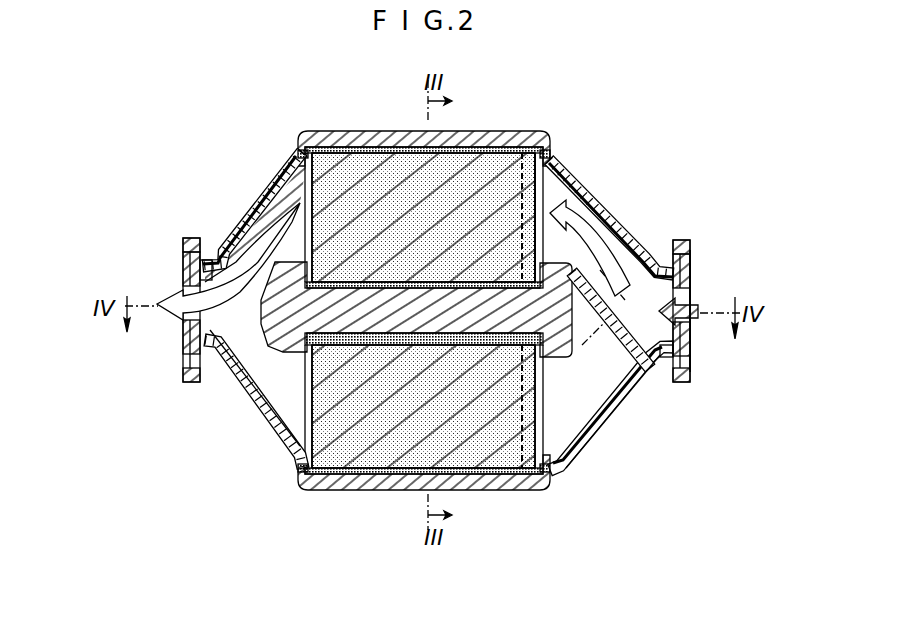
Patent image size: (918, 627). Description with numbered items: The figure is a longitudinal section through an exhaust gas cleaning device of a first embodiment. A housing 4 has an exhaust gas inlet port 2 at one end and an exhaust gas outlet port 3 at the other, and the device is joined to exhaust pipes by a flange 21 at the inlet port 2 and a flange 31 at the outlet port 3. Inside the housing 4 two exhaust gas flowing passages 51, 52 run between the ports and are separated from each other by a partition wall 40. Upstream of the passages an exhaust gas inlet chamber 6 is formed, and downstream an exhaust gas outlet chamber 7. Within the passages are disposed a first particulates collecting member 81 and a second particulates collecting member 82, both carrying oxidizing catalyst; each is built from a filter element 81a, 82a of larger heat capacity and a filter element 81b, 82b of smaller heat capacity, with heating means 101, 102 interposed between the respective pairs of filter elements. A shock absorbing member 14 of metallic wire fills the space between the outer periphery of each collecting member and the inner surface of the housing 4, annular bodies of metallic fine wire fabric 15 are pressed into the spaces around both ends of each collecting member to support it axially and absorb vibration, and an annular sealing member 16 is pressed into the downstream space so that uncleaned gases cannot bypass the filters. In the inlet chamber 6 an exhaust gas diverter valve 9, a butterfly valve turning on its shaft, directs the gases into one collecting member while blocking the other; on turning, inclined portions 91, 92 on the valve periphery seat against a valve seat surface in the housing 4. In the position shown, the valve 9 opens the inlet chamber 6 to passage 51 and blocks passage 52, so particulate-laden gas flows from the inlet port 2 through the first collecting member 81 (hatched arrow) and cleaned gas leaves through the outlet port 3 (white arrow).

The exhaust gas inlet port 2 is at (688, 290).
The exhaust gas outlet port 3 is at (186, 272).
The housing 4 is at (527, 140).
The exhaust gas inlet chamber 6 is at (670, 356).
The exhaust gas outlet chamber 7 is at (238, 354).
The exhaust gas diverter valve 9 is at (604, 392).
The shock absorbing member 14 is at (404, 142).
The metallic fine wire fabric 15 is at (304, 140).
The annular sealing member 16 is at (338, 146).
The flange 21 is at (688, 242).
The flange 31 is at (208, 250).
The partition wall 40 is at (362, 474).
The exhaust gas flowing passage 51 is at (290, 172).
The exhaust gas flowing passage 52 is at (268, 430).
The first particulates collecting member 81 is at (380, 170).
The filter element 81a is at (470, 160).
The filter element 81b is at (536, 146).
The second particulates collecting member 82 is at (392, 420).
The filter element 82a is at (470, 430).
The filter element 82b is at (533, 478).
The inclined portion 91 is at (600, 248).
The inclined portion 92 is at (612, 262).
The heating means 101 is at (522, 150).
The heating means 102 is at (522, 470).